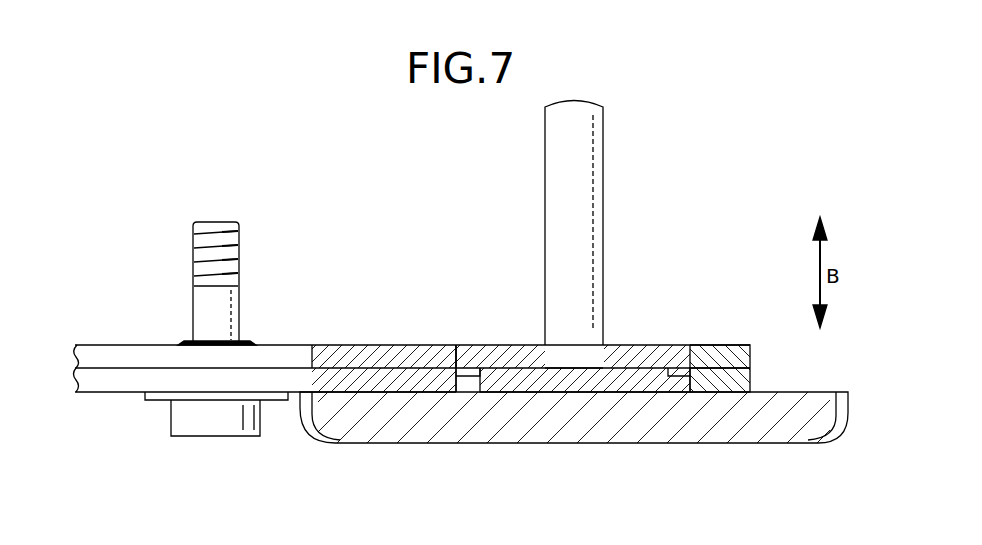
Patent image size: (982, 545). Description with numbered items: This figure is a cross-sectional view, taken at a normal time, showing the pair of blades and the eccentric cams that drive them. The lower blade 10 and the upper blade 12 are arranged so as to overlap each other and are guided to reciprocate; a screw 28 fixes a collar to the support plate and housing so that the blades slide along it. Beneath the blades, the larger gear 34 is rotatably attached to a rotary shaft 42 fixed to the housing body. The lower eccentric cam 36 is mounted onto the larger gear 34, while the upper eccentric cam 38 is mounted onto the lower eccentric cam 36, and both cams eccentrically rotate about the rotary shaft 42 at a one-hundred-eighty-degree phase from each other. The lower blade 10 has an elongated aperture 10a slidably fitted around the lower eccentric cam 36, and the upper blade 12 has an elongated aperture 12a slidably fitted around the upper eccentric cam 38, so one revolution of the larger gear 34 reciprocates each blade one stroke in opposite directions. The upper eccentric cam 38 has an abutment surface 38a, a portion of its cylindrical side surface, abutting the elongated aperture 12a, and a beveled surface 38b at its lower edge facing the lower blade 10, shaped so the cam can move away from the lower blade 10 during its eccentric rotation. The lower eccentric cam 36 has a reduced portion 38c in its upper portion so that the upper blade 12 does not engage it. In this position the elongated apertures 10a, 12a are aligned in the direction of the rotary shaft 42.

The lower blade 10 is at (113, 378).
The elongated aperture 10a is at (470, 394).
The upper blade 12 is at (111, 358).
The elongated aperture 12a is at (470, 346).
The screw 28 is at (215, 420).
The larger gear 34 is at (768, 415).
The lower eccentric cam 36 is at (633, 385).
The upper eccentric cam 38 is at (638, 352).
The abutment surface 38a is at (712, 350).
The beveled surface 38b is at (680, 376).
The reduced portion 38c is at (476, 378).
The rotary shaft 42 is at (600, 197).